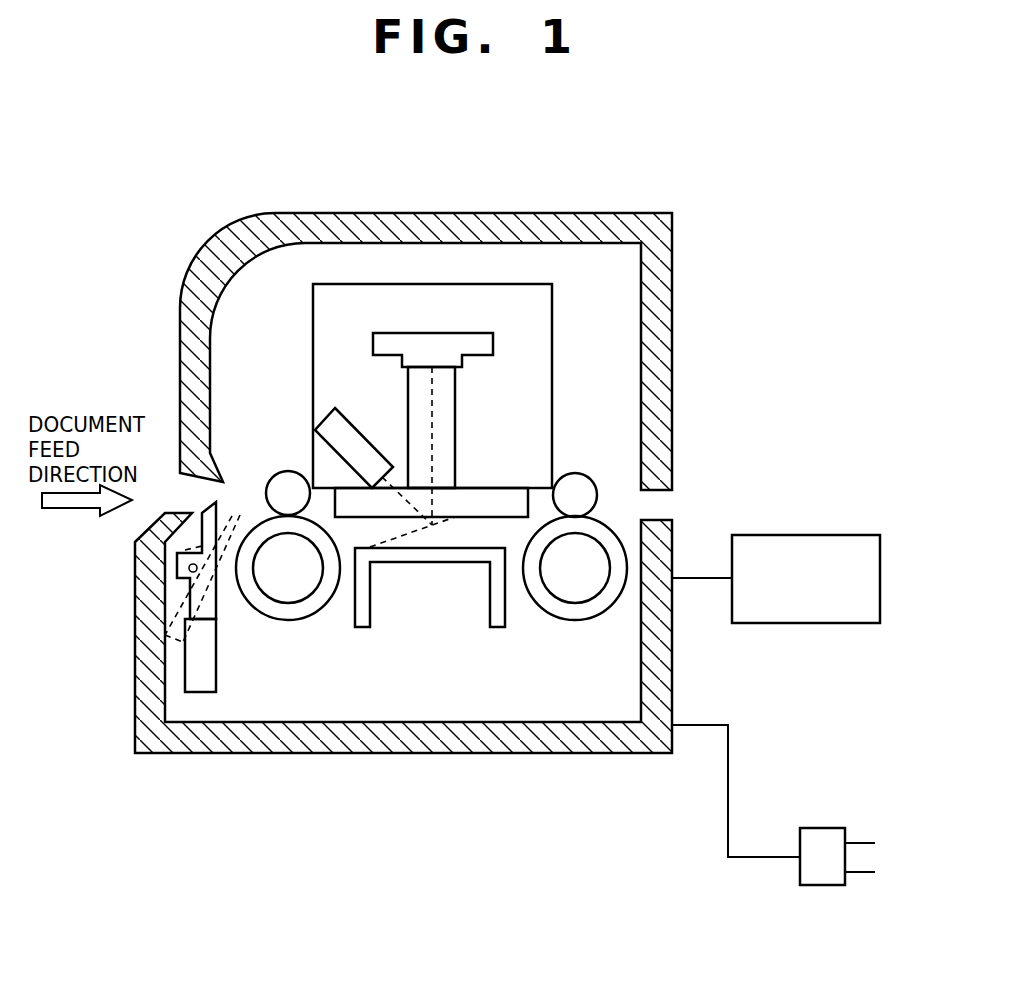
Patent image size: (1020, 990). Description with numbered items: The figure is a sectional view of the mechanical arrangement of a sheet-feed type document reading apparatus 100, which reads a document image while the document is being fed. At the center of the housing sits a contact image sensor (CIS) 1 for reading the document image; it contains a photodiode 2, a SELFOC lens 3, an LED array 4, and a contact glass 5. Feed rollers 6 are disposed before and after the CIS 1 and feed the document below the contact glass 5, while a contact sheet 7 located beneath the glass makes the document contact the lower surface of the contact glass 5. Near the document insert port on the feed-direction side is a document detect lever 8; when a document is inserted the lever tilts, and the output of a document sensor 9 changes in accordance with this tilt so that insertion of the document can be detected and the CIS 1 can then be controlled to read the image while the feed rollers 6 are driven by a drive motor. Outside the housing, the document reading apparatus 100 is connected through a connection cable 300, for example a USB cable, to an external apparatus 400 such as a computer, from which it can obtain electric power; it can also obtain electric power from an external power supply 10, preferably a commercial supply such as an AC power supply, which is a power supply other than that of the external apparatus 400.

The contact image sensor (CIS) 1 is at (313, 308).
The photodiode 2 is at (493, 335).
The SELFOC lens 3 is at (455, 398).
The LED array 4 is at (334, 408).
The contact glass 5 is at (510, 488).
The feed rollers 6 is at (288, 620).
The contact sheet 7 is at (424, 537).
The document detect lever 8 is at (207, 510).
The document sensor 9 is at (217, 678).
The external power supply 10 is at (803, 888).
The document reading apparatus 100 is at (343, 753).
The connection cable 300 is at (697, 578).
The external apparatus 400 is at (835, 535).